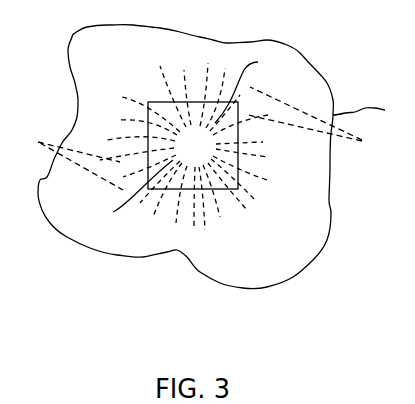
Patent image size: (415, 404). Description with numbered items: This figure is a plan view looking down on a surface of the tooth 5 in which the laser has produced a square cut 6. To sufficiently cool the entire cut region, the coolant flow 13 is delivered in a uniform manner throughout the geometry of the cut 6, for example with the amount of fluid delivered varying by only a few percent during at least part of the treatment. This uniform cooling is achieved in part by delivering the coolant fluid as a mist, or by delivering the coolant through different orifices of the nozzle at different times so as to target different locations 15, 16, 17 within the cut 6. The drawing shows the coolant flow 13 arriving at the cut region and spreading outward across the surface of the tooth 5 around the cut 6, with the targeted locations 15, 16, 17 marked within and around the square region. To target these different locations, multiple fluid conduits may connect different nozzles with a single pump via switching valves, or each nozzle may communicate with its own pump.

The tooth 5 is at (366, 113).
The cut 6 is at (212, 155).
The coolant flow 13 is at (199, 138).
The location 15 is at (246, 87).
The location 16 is at (212, 150).
The location 17 is at (132, 194).